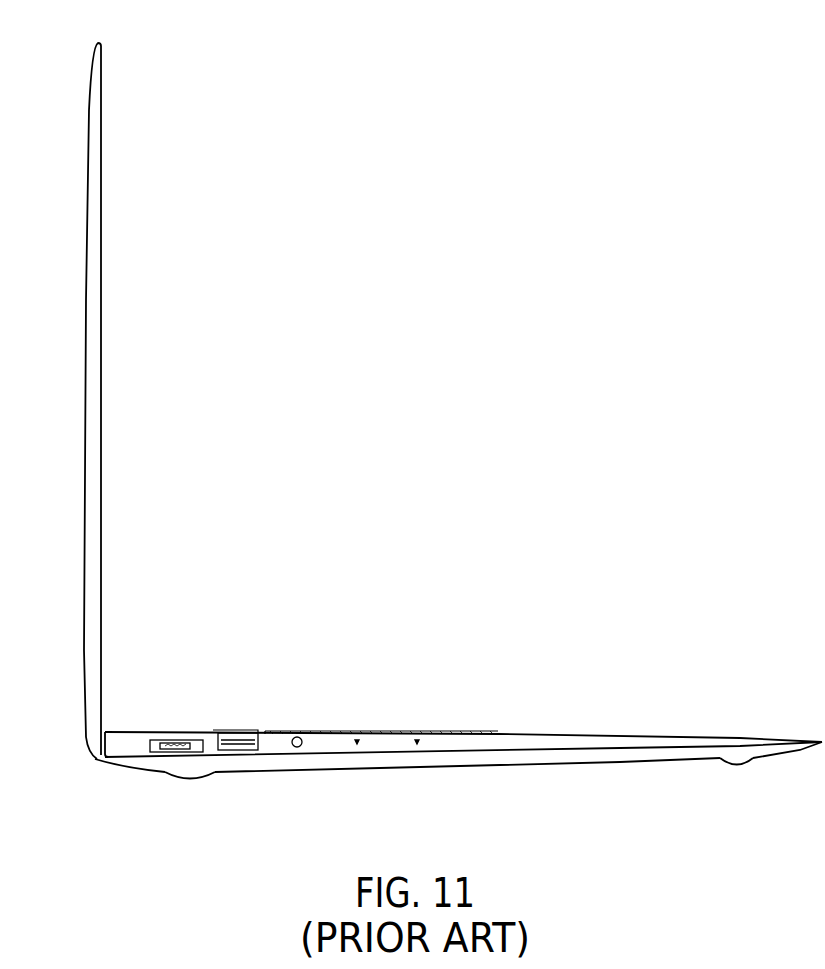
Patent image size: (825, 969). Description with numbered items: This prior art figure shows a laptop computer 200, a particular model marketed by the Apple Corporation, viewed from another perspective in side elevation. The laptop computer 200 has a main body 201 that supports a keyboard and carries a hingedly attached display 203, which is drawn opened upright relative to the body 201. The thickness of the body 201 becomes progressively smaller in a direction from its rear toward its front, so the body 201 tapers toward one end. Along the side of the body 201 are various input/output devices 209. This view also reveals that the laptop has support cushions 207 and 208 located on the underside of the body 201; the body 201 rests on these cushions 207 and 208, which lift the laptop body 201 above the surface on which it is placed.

The laptop computer 200 is at (437, 425).
The main body 201 is at (538, 737).
The display 203 is at (93, 307).
The support cushion 207 is at (192, 783).
The support cushion 208 is at (737, 769).
The input/output devices 209 is at (224, 729).